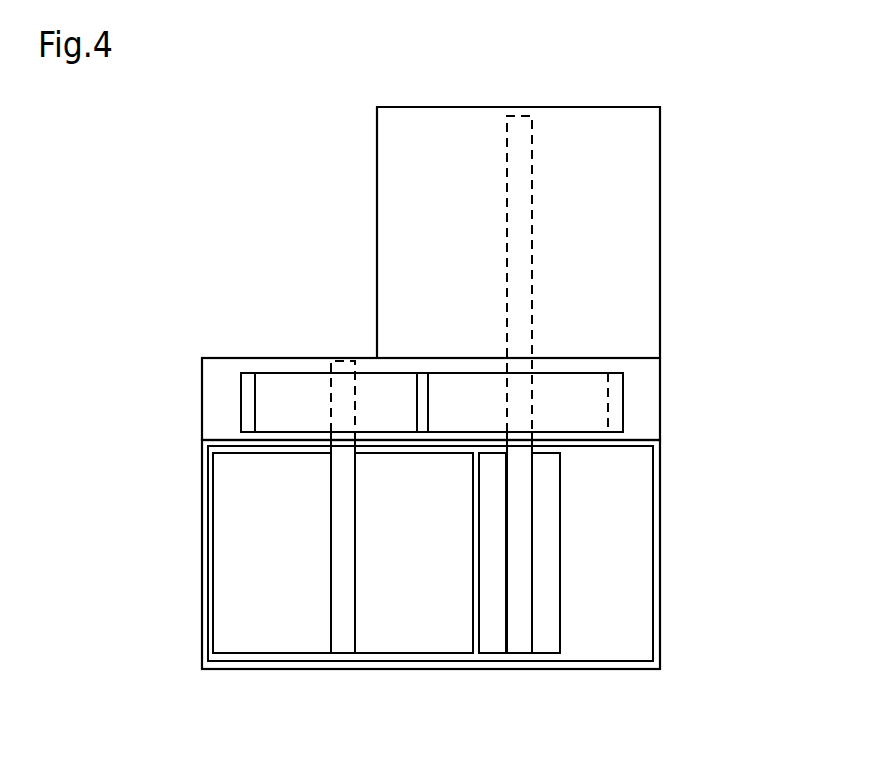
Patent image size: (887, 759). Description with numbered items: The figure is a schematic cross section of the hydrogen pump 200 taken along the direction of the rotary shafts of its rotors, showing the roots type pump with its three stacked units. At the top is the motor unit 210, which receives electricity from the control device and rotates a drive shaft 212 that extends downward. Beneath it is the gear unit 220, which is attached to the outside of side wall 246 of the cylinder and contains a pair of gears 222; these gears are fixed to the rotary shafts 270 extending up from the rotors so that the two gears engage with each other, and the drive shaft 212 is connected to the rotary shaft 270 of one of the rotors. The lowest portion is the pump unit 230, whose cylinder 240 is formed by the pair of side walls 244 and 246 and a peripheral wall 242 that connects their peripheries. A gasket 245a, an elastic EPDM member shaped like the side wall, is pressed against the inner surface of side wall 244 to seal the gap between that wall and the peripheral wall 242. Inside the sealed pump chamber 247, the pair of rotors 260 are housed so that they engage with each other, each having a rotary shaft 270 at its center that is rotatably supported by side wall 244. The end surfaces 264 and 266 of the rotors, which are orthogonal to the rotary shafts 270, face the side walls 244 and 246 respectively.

The hydrogen pump 200 is at (153, 124).
The motor unit 210 is at (758, 110).
The drive shaft 212 is at (532, 305).
The gear unit 220 is at (758, 362).
The pair of gears 222 is at (240, 376).
The pump unit 230 is at (758, 440).
The cylinder 240 is at (200, 527).
The peripheral wall 242 is at (207, 608).
The side wall 244 is at (573, 671).
The gasket 245a is at (210, 663).
The side wall 246 is at (222, 440).
The pump chamber 247 is at (633, 643).
The pair of rotors 260 is at (213, 568).
The end surface 264 is at (266, 653).
The end surface 266 is at (267, 462).
The rotary shaft 270 is at (343, 653).